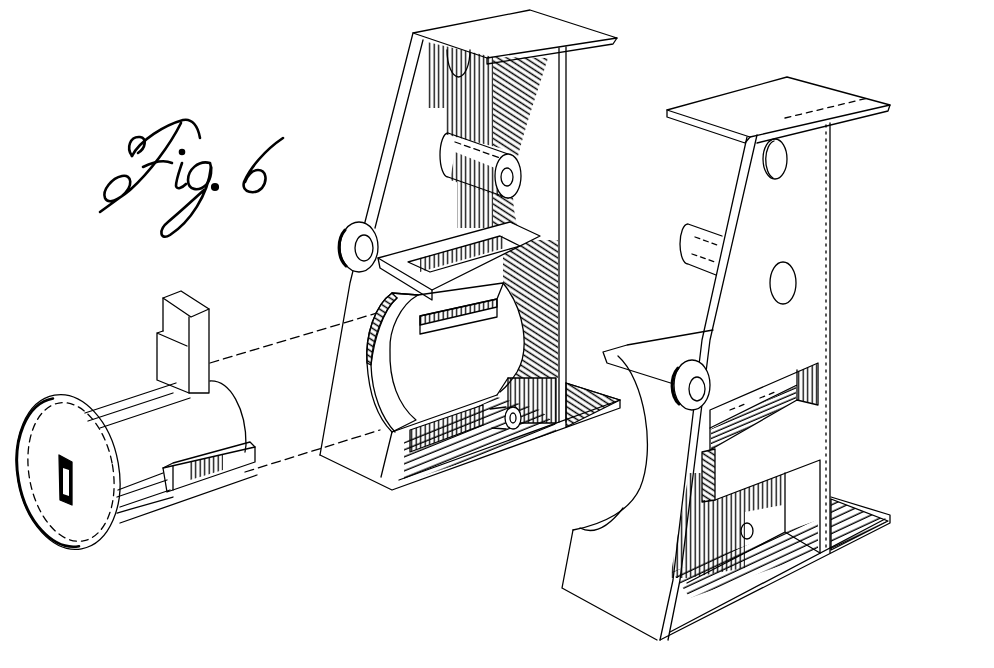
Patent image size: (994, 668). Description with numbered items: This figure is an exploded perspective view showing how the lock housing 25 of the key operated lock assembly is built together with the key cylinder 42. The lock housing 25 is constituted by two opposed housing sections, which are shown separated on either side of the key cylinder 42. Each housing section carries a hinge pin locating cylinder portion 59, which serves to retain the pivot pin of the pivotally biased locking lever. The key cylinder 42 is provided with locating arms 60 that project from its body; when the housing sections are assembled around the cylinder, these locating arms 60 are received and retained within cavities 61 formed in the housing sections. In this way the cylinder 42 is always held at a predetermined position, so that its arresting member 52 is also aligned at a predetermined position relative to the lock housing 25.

The lock housing 25 is at (399, 152).
The key cylinder 42 is at (143, 449).
The arresting member 52 is at (206, 323).
The hinge pin locating cylinder portion 59 is at (453, 162).
The locating arms 60 is at (230, 463).
The cavities 61 is at (463, 318).